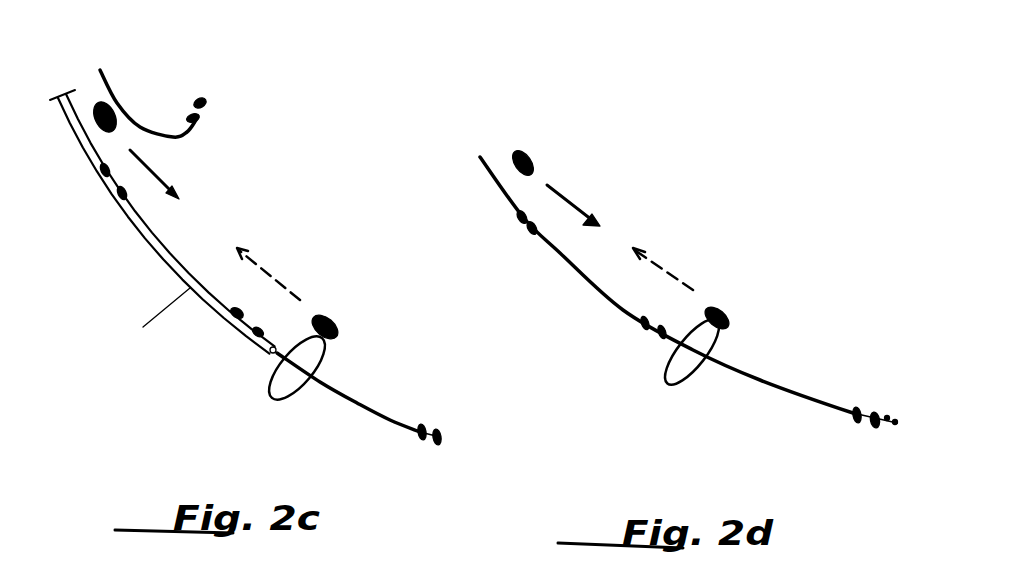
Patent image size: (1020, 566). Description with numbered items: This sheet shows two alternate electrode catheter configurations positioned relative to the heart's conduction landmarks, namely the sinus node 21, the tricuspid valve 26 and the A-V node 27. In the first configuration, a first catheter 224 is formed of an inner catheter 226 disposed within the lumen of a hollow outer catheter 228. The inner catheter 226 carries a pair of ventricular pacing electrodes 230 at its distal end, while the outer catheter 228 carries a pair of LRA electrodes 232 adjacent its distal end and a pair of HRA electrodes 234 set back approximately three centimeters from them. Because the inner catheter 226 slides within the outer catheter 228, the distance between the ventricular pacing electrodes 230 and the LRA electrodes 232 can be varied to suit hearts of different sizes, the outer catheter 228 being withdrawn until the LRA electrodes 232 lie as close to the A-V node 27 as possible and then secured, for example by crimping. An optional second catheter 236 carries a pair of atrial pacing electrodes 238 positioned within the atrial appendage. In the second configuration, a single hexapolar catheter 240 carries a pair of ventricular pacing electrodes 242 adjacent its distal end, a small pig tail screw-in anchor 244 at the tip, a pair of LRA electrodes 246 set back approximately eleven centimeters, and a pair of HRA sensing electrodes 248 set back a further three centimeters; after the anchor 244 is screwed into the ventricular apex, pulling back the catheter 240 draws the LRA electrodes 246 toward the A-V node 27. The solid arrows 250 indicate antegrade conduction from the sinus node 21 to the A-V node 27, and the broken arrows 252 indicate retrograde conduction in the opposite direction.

In FIG. 2C, the sinus node 21 is at (114, 115).
In FIG. 2D, the sinus node 21 is at (531, 160).
In FIG. 2C, the tricuspid valve 26 is at (265, 402).
In FIG. 2D, the tricuspid valve 26 is at (680, 384).
In FIG. 2C, the A-V node 27 is at (330, 318).
In FIG. 2D, the A-V node 27 is at (721, 310).
In FIG. 2C, the first catheter 224 is at (79, 143).
In FIG. 2C, the inner catheter 226 is at (357, 401).
In FIG. 2C, the outer catheter 228 is at (151, 320).
In FIG. 2C, the ventricular pacing electrodes 230 is at (439, 430).
In FIG. 2C, the LRA electrodes 232 is at (252, 338).
In FIG. 2C, the HRA electrodes 234 is at (103, 176).
In FIG. 2C, the second catheter 236 is at (112, 83).
In FIG. 2C, the atrial pacing electrodes 238 is at (207, 120).
In FIG. 2D, the hexapolar catheter 240 is at (493, 183).
In FIG. 2D, the ventricular pacing electrodes 242 is at (877, 413).
In FIG. 2D, the pig tail screw-in anchor 244 is at (888, 425).
In FIG. 2D, the LRA electrodes 246 is at (659, 338).
In FIG. 2D, the HRA sensing electrodes 248 is at (518, 223).
In FIG. 2C, the solid arrows 250 is at (163, 175).
In FIG. 2D, the solid arrows 250 is at (570, 198).
In FIG. 2C, the broken arrows 252 is at (273, 277).
In FIG. 2D, the broken arrows 252 is at (670, 272).